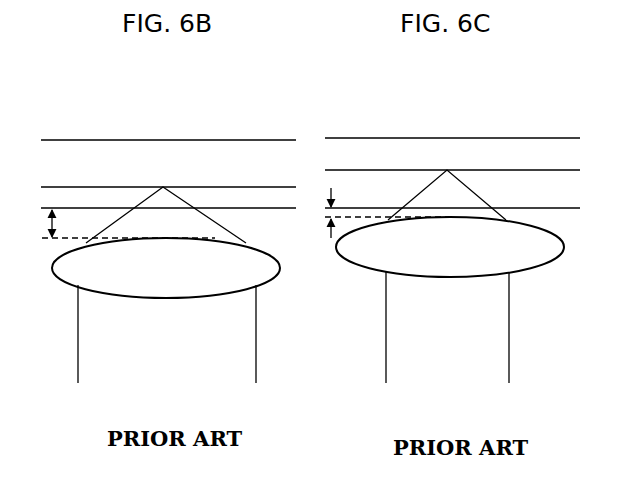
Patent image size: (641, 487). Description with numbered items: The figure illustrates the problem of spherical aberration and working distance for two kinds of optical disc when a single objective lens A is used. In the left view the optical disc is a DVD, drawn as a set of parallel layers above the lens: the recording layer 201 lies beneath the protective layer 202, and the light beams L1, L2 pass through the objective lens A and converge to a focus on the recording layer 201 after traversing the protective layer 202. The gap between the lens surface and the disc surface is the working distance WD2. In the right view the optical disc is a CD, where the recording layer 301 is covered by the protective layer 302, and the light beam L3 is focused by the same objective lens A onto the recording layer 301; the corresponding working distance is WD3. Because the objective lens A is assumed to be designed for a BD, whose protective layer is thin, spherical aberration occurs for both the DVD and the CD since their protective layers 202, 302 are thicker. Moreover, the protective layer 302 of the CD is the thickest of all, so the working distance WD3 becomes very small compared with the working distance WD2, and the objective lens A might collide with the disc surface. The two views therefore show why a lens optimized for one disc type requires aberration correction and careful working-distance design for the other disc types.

In FIG. 6B, the recording layer 201 is at (215, 187).
In FIG. 6B, the protective layer 202 is at (94, 199).
In FIG. 6C, the recording layer 301 is at (516, 170).
In FIG. 6C, the protective layer 302 is at (378, 191).
In FIG. 6B, the objective lens A is at (166, 287).
In FIG. 6C, the objective lens A is at (441, 270).
In FIG. 6B, the element DVD is at (163, 140).
In FIG. 6C, the element CD is at (456, 138).
In FIG. 6B, the working distance WD2 is at (110, 224).
In FIG. 6C, the working distance WD3 is at (366, 213).
In FIG. 6B, the light beam L1 is at (0, 347).
In FIG. 6B, the light beam L2 is at (256, 345).
In FIG. 6C, the light beam L3 is at (509, 345).